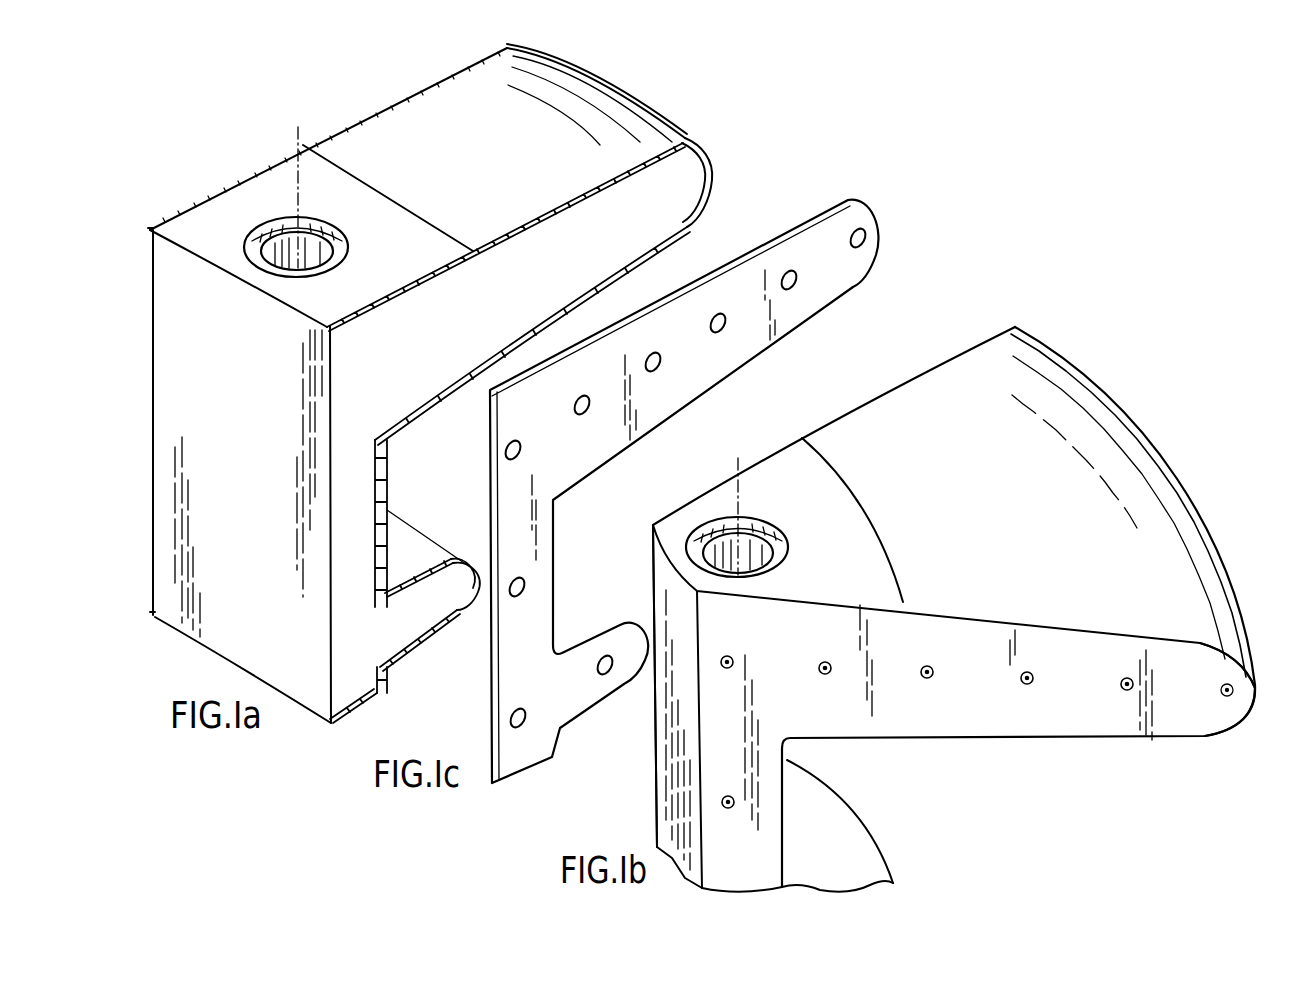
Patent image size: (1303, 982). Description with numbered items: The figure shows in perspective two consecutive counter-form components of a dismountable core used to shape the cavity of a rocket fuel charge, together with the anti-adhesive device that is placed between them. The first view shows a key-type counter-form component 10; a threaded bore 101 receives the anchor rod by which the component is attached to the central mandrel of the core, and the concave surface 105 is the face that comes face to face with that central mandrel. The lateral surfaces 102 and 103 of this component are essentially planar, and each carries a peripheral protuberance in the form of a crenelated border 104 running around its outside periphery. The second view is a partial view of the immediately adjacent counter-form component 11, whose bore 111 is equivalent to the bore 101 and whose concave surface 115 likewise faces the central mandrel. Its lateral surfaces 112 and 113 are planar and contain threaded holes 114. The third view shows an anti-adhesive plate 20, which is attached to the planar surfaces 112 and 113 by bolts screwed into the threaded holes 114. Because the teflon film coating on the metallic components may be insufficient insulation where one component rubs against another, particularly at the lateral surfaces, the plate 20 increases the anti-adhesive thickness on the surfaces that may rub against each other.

In FIG. 1A, the counter-form component 10 is at (333, 110).
In FIG. 1A, the threaded bore 101 is at (285, 245).
In FIG. 1A, the lateral surface 102 is at (417, 92).
In FIG. 1A, the lateral surface 103 is at (677, 173).
In FIG. 1A, the crenelated border 104 is at (673, 243).
In FIG. 1A, the concave surface 105 is at (187, 372).
In FIG. 1C, the anti-adhesive plate 20 is at (843, 263).
In FIG. 1B, the counter-form component 11 is at (1094, 362).
In FIG. 1B, the bore 111 is at (732, 548).
In FIG. 1B, the lateral surface 112 is at (900, 377).
In FIG. 1B, the lateral surface 113 is at (1207, 707).
In FIG. 1B, the threaded holes 114 is at (1027, 686).
In FIG. 1B, the concave surface 115 is at (688, 762).